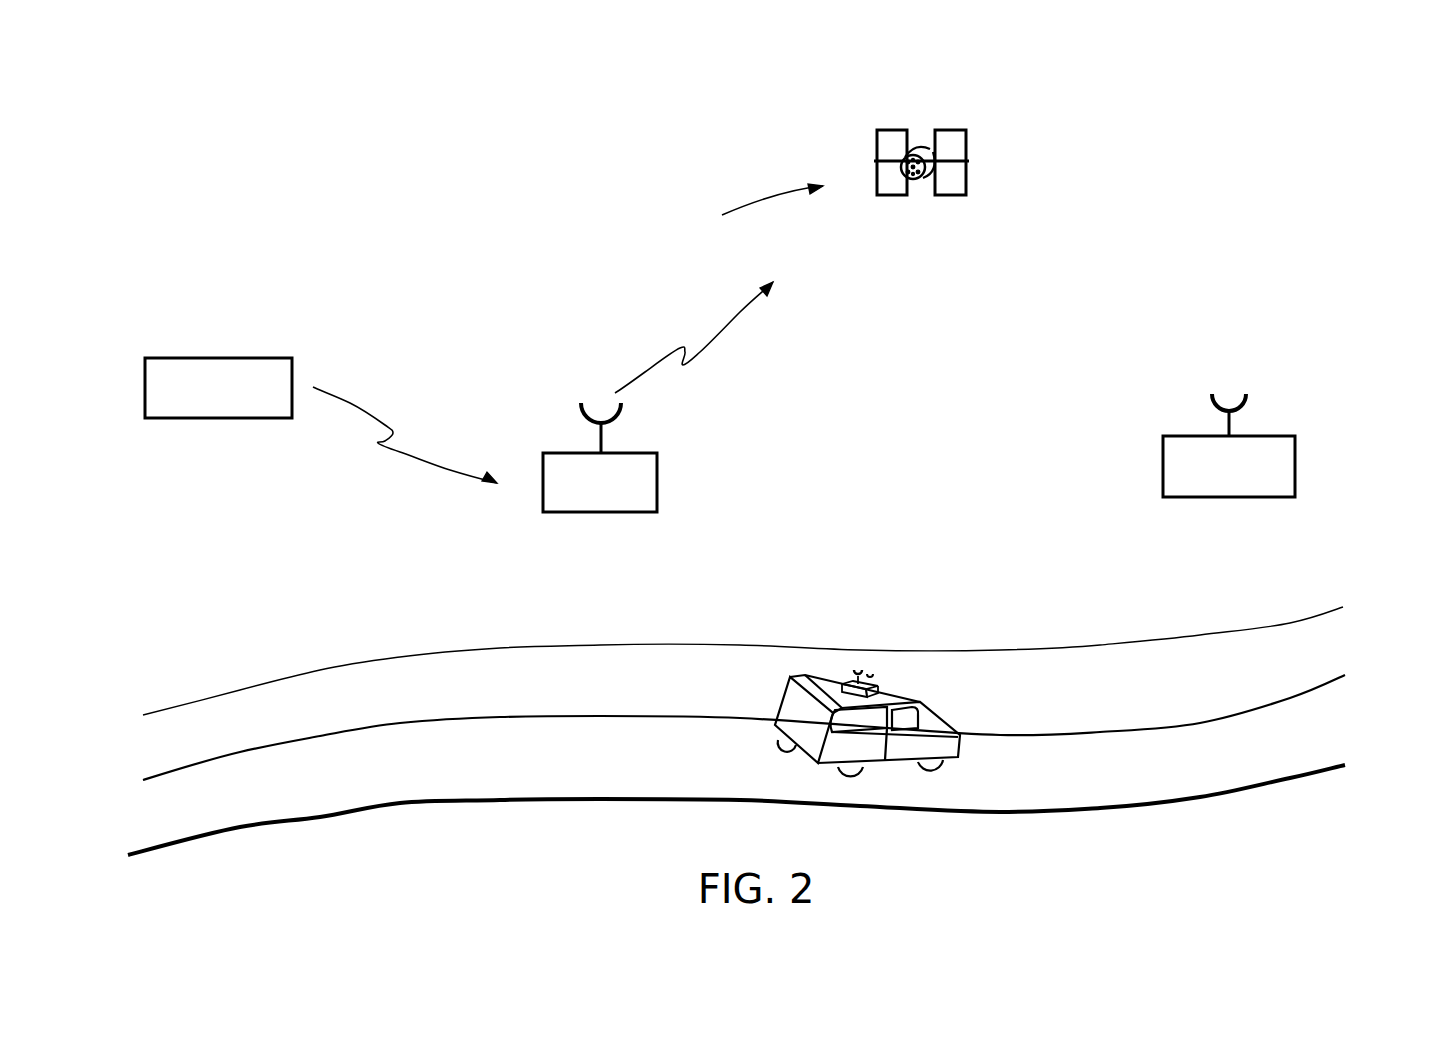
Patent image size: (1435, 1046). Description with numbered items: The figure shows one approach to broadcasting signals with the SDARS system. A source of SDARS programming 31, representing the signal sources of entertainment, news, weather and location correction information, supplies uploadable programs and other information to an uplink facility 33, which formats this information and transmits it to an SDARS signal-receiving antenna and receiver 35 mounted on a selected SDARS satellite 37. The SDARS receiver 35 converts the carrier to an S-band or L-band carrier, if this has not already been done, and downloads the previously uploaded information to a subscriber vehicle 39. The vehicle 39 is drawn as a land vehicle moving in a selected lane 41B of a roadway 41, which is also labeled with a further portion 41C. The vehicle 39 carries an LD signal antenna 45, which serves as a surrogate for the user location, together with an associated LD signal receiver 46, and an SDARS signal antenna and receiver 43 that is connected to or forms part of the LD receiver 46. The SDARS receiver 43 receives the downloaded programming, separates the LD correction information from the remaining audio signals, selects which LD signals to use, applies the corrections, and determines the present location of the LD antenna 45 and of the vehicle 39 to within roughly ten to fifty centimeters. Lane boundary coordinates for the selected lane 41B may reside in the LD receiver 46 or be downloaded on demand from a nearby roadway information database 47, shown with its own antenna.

The SDARS programming source 31 is at (218, 368).
The uplink facility 33 is at (642, 477).
The SDARS signal-receiving antenna and receiver 35 is at (954, 145).
The SDARS satellite 37 is at (754, 209).
The vehicle 39 is at (854, 709).
The roadway 41 is at (772, 727).
The selected lane 41B is at (1127, 790).
The roadway edge 41C is at (1155, 652).
The SDARS signal antenna and receiver 43 is at (837, 680).
The LD signal antenna 45 is at (870, 677).
The LD signal receiver 46 is at (880, 690).
The roadway information database 47 is at (1278, 465).